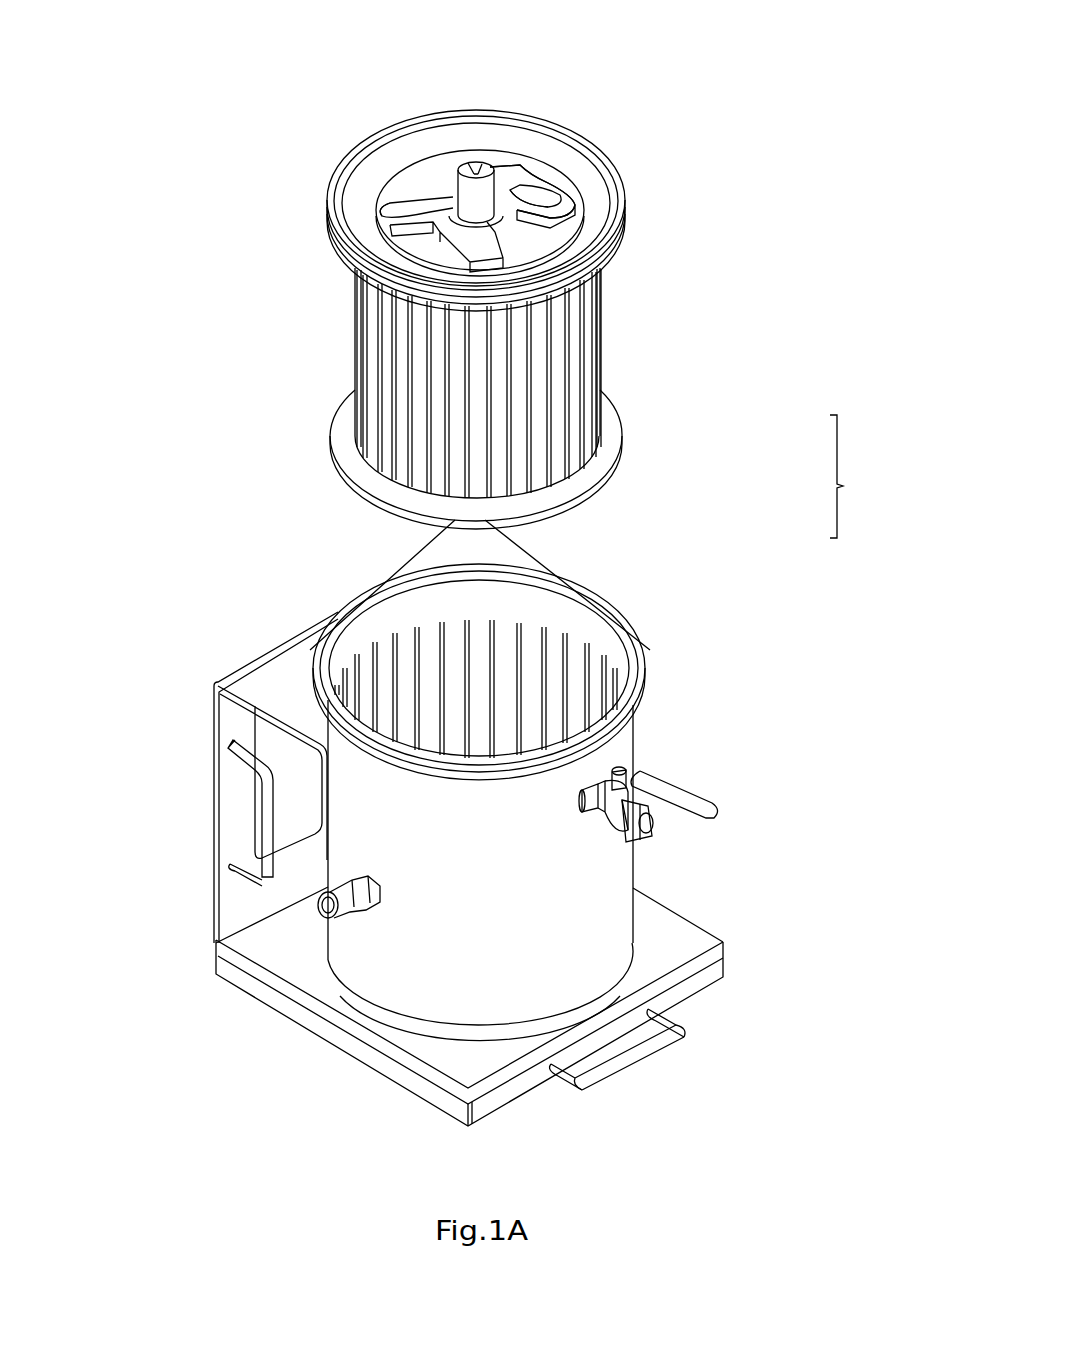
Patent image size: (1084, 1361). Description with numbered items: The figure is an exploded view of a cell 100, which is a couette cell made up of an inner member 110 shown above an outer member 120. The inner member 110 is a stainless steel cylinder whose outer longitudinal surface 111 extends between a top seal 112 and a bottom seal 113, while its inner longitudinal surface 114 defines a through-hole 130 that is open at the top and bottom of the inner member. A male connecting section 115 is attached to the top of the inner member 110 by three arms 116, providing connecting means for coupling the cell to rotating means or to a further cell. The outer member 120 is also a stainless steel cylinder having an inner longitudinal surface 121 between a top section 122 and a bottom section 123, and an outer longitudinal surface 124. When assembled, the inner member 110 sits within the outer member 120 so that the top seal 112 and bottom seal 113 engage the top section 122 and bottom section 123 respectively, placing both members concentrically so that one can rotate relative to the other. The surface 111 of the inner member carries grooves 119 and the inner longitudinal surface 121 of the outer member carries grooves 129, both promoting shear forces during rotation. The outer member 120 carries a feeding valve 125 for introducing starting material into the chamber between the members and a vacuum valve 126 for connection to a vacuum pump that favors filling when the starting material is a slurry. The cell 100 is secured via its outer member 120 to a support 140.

The cell 100 is at (868, 476).
The inner member 110 is at (492, 266).
The outer longitudinal surface 111 is at (485, 382).
The top seal 112 is at (625, 212).
The bottom seal 113 is at (333, 443).
The inner longitudinal surface 114 is at (548, 207).
The male connecting section 115 is at (493, 186).
The arms 116 is at (382, 216).
The grooves 119 is at (377, 357).
The through-hole 130 is at (423, 190).
The outer member 120 is at (464, 776).
The inner longitudinal surface 121 is at (592, 677).
The top section 122 is at (488, 665).
The grooves 129 is at (415, 638).
The bottom section 123 is at (347, 978).
The outer longitudinal surface 124 is at (465, 876).
The feeding valve 125 is at (315, 910).
The vacuum valve 126 is at (655, 826).
The support 140 is at (350, 1047).